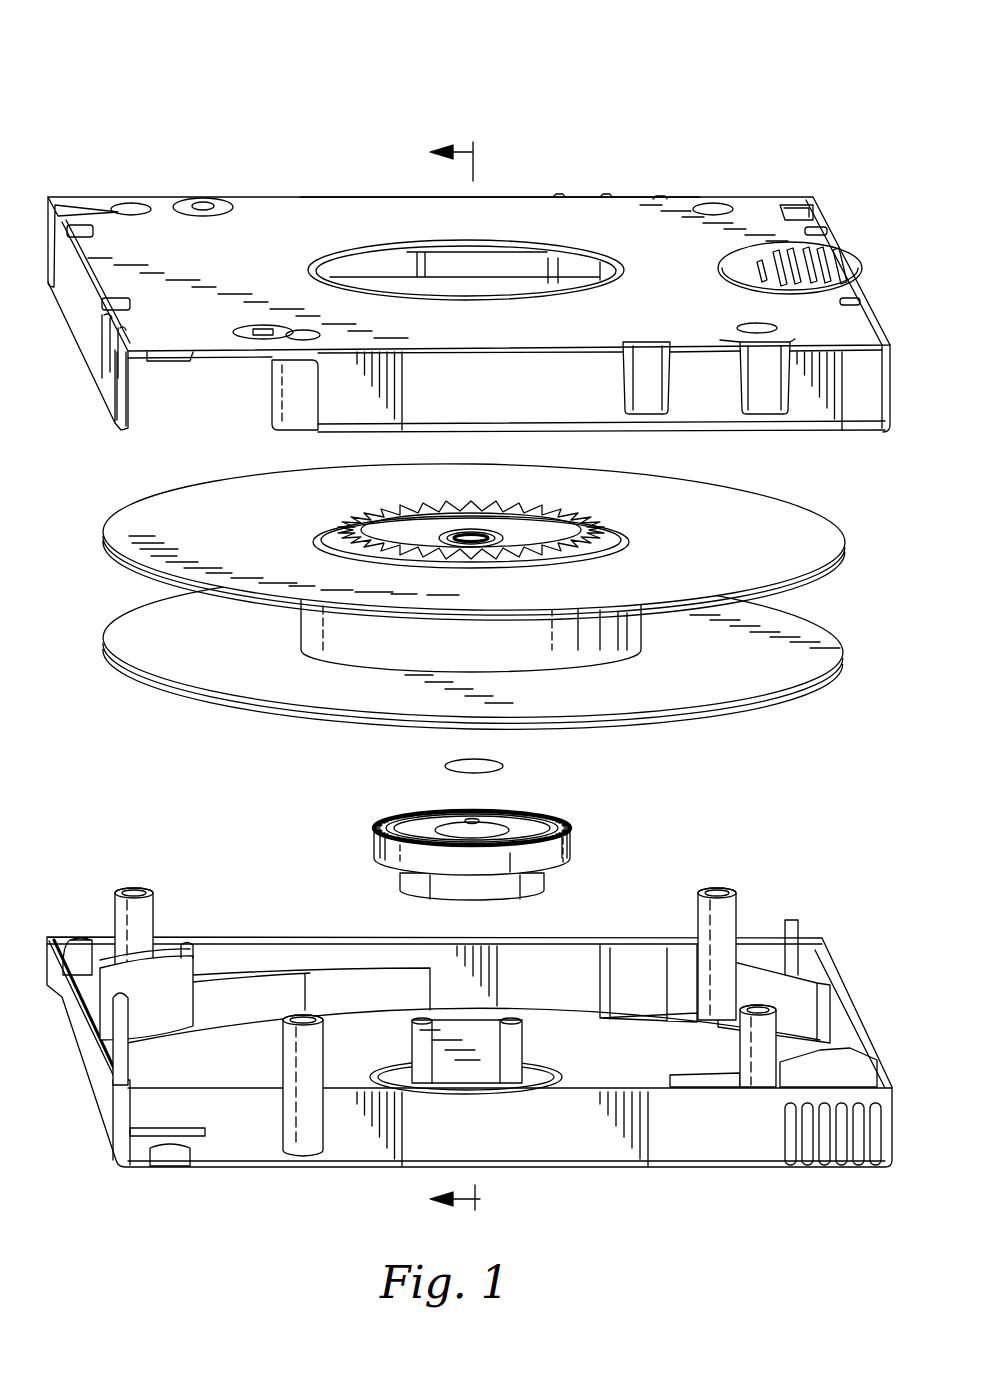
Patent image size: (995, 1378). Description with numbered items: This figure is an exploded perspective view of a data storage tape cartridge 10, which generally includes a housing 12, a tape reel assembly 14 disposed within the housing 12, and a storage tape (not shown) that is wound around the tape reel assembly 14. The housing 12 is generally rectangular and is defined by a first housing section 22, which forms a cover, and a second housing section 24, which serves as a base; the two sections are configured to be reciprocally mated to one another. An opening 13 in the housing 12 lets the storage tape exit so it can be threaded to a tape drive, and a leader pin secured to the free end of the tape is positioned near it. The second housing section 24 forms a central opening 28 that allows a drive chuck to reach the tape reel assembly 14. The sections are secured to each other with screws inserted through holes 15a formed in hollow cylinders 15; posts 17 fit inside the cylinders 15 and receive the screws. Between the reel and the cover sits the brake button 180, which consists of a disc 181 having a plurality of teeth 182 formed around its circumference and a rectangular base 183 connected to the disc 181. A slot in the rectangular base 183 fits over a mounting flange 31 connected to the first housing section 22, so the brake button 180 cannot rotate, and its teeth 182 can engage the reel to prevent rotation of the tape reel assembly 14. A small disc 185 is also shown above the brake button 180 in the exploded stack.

The data storage tape cartridge 10 is at (173, 71).
The housing 12 is at (799, 189).
The opening 13 is at (130, 402).
The tape reel assembly 14 is at (836, 508).
The hollow cylinder 15 is at (293, 413).
The hole 15a is at (140, 207).
The post 17 is at (128, 915).
The first housing section 22 is at (181, 940).
The second housing section 24 is at (521, 196).
The central opening 28 is at (398, 250).
The mounting flange 31 is at (490, 1038).
The brake button 180 is at (374, 846).
The disc 181 is at (570, 848).
The teeth 182 is at (561, 824).
The rectangular base 183 is at (493, 827).
The disc 185 is at (446, 766).